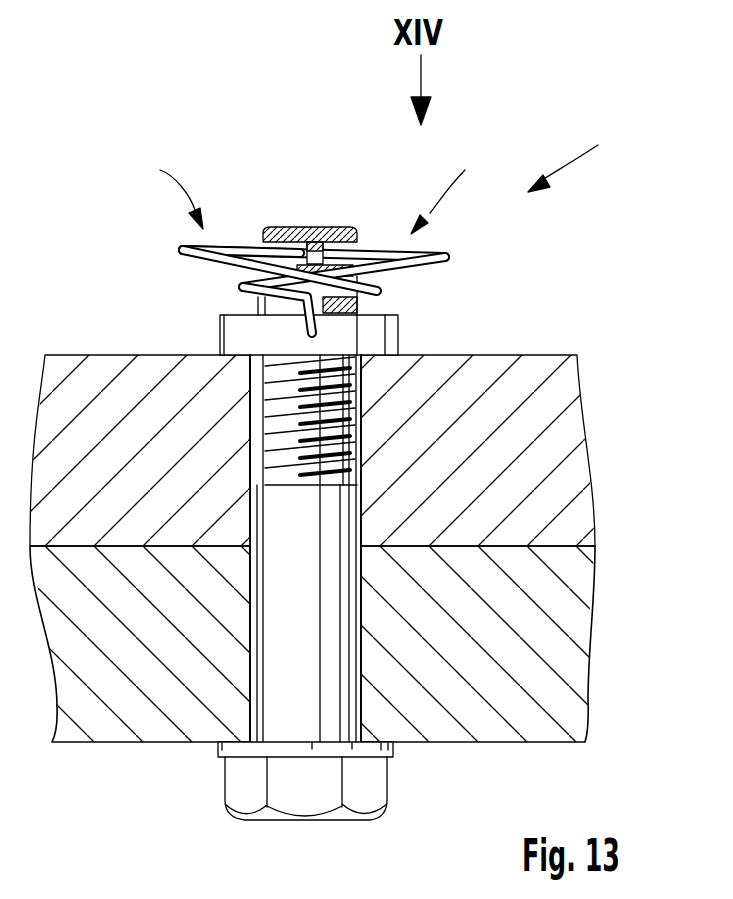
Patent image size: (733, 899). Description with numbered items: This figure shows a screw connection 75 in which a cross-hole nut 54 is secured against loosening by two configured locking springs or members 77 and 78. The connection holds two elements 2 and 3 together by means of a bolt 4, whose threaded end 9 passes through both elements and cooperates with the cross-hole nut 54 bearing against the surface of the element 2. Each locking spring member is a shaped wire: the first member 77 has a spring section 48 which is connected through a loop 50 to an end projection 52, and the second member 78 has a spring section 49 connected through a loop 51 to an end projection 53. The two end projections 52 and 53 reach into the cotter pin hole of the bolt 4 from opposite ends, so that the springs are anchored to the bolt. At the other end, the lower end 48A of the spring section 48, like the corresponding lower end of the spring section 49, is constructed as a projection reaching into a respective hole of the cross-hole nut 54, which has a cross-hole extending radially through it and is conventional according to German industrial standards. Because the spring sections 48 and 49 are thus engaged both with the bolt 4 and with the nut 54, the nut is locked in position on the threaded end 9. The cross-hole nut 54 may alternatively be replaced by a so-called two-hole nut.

The element 2 is at (577, 417).
The element 3 is at (577, 628).
The bolt 4 is at (275, 702).
The threaded end 9 is at (272, 411).
The spring section 48 is at (238, 286).
The lower end of the spring section 48A is at (306, 333).
The spring section 49 is at (380, 294).
The loop 50 is at (447, 256).
The loop 51 is at (178, 249).
The end projection 52 is at (278, 227).
The end projection 53 is at (337, 250).
The cross-hole nut 54 is at (398, 337).
The screw connection 75 is at (580, 158).
The locking spring member 77 is at (164, 188).
The locking spring member 78 is at (450, 190).